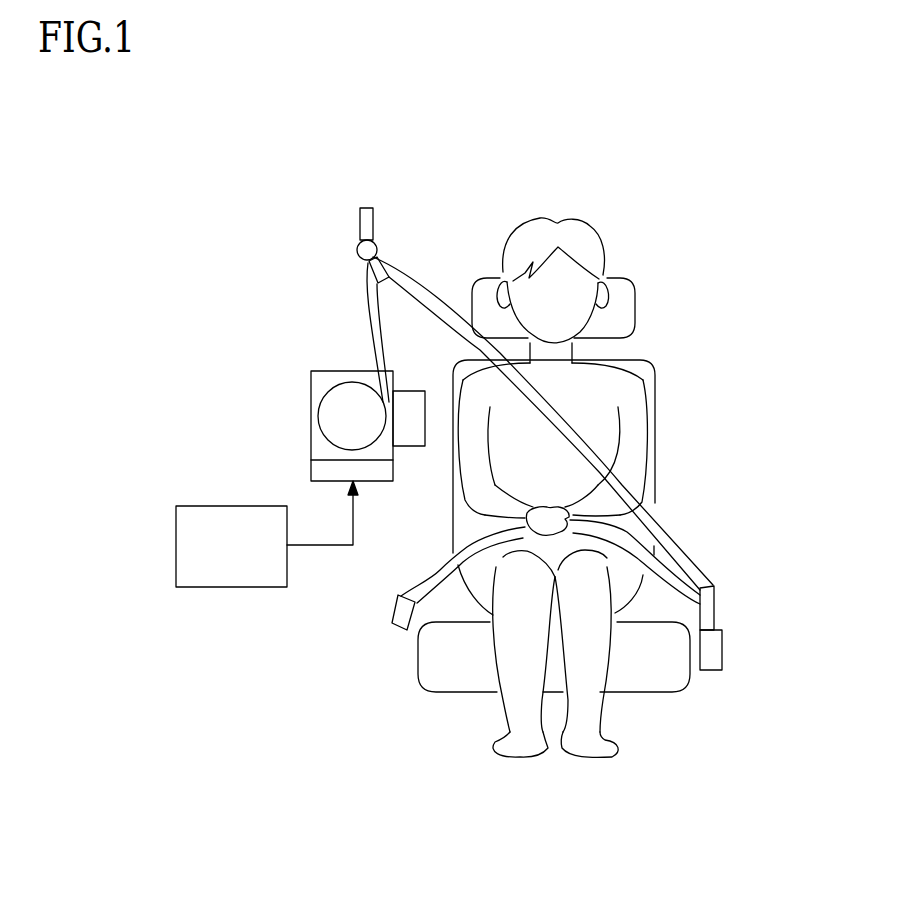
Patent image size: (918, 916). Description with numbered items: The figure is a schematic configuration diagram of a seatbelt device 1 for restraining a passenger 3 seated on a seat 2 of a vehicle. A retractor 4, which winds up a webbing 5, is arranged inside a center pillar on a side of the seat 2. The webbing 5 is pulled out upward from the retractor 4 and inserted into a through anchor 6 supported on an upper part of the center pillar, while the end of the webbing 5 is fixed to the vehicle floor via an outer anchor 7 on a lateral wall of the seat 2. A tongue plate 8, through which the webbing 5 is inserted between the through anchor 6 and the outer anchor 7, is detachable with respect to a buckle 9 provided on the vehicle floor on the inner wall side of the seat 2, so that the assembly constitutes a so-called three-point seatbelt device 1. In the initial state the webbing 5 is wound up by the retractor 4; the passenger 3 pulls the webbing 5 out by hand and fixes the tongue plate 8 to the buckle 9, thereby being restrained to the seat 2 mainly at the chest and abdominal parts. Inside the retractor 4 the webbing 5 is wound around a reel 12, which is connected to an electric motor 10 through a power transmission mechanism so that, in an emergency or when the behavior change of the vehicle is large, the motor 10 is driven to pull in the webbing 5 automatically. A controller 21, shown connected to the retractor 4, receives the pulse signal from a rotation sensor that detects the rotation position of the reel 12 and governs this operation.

The seatbelt device 1 is at (407, 225).
The seat 2 is at (656, 674).
The passenger 3 is at (592, 231).
The retractor 4 is at (352, 370).
The webbing 5 is at (683, 533).
The through anchor 6 is at (370, 268).
The outer anchor 7 is at (400, 614).
The tongue plate 8 is at (713, 612).
The buckle 9 is at (713, 650).
The electric motor 10 is at (379, 470).
The reel 12 is at (335, 420).
The controller 21 is at (233, 588).